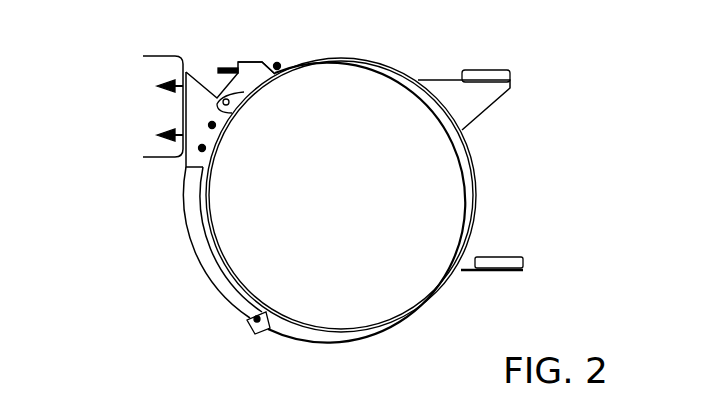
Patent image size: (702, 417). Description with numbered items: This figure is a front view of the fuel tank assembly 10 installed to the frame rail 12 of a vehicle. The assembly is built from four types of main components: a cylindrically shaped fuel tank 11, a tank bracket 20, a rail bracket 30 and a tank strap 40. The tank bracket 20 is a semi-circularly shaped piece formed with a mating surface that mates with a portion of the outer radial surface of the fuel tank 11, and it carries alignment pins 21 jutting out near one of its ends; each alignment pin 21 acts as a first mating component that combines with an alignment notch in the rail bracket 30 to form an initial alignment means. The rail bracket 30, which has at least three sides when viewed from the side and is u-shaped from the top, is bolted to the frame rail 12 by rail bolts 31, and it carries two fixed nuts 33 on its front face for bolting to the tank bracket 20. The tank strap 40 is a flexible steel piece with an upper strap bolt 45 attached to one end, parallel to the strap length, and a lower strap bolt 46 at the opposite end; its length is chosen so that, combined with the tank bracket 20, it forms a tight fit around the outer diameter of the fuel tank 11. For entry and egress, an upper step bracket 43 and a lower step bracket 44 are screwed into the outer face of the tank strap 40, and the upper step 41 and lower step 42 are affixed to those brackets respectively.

The fuel tank assembly 10 is at (448, 345).
The fuel tank 11 is at (355, 262).
The frame rail 12 is at (158, 52).
The tank bracket 20 is at (253, 60).
The alignment pin 21 is at (234, 96).
The rail bracket 30 is at (198, 96).
The rail bolt 31 is at (165, 128).
The fixed nut 33 is at (215, 126).
The tank strap 40 is at (291, 60).
The upper step 41 is at (482, 68).
The lower step 42 is at (508, 251).
The upper step bracket 43 is at (489, 119).
The lower step bracket 44 is at (464, 277).
The upper strap bolt 45 is at (228, 65).
The lower strap bolt 46 is at (249, 326).